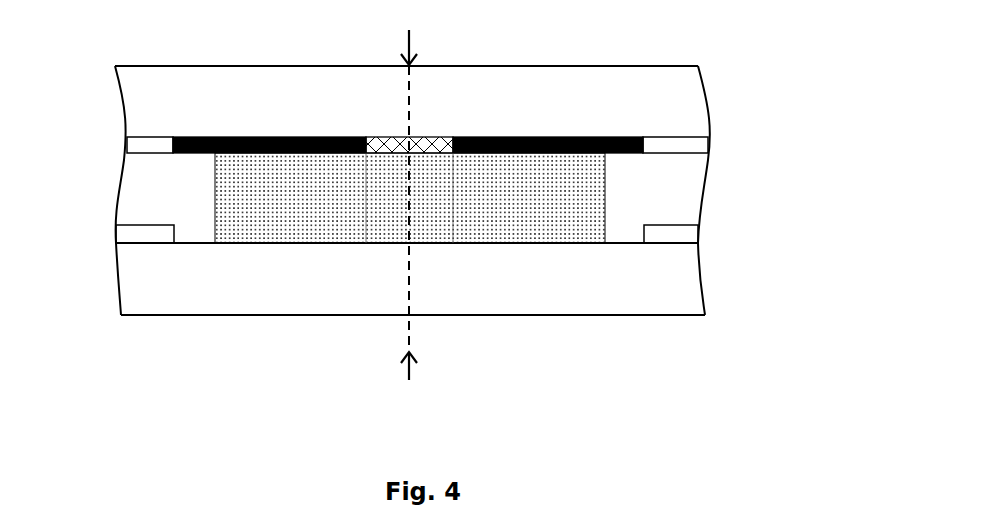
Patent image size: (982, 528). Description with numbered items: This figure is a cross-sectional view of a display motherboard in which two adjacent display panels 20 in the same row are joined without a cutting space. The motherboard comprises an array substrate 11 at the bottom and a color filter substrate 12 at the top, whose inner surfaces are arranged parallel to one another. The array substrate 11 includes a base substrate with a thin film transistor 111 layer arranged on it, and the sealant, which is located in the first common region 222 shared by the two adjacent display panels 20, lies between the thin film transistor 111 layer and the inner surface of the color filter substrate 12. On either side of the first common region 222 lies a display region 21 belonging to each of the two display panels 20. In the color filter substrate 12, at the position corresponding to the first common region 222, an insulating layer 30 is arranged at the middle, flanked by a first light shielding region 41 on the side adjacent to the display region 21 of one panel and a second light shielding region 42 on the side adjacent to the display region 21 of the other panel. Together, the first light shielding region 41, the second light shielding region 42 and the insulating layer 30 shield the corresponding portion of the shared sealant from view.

The display panel 20 is at (412, 66).
The color filter substrate 12 is at (124, 66).
The array substrate 11 is at (118, 225).
The first light shielding region 41 is at (127, 145).
The second light shielding region 42 is at (708, 145).
The insulating layer 30 is at (380, 137).
The display region 21 is at (143, 190).
The first common region 222 is at (598, 203).
The thin film transistor 111 is at (673, 234).